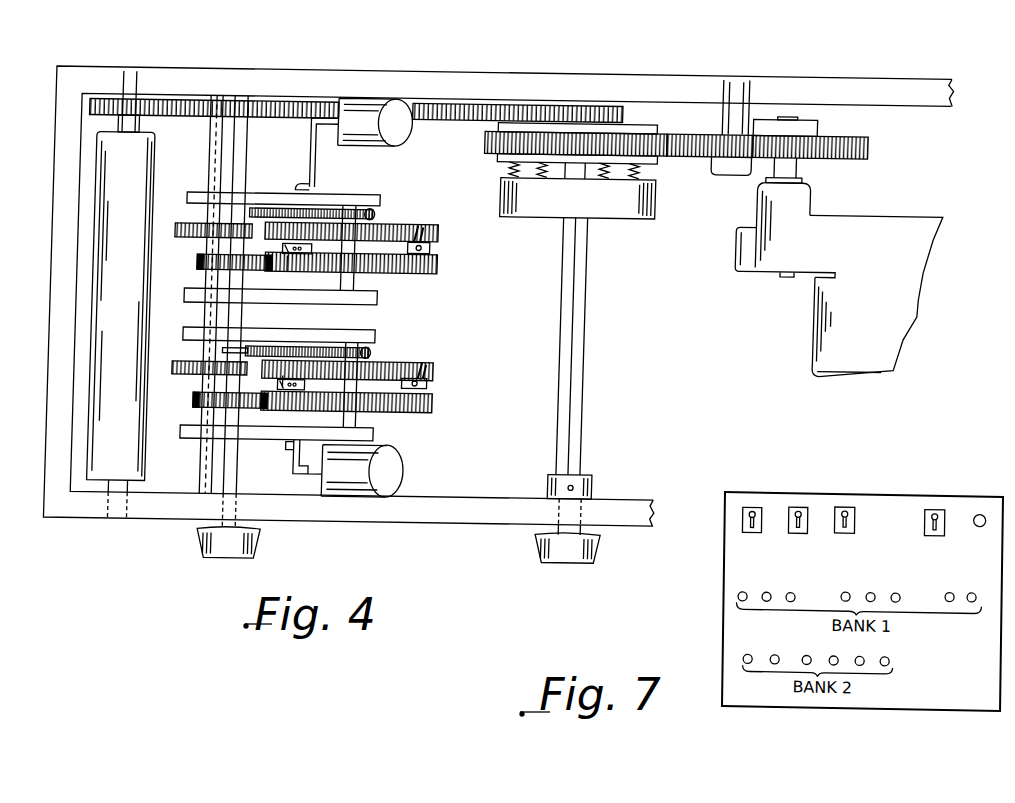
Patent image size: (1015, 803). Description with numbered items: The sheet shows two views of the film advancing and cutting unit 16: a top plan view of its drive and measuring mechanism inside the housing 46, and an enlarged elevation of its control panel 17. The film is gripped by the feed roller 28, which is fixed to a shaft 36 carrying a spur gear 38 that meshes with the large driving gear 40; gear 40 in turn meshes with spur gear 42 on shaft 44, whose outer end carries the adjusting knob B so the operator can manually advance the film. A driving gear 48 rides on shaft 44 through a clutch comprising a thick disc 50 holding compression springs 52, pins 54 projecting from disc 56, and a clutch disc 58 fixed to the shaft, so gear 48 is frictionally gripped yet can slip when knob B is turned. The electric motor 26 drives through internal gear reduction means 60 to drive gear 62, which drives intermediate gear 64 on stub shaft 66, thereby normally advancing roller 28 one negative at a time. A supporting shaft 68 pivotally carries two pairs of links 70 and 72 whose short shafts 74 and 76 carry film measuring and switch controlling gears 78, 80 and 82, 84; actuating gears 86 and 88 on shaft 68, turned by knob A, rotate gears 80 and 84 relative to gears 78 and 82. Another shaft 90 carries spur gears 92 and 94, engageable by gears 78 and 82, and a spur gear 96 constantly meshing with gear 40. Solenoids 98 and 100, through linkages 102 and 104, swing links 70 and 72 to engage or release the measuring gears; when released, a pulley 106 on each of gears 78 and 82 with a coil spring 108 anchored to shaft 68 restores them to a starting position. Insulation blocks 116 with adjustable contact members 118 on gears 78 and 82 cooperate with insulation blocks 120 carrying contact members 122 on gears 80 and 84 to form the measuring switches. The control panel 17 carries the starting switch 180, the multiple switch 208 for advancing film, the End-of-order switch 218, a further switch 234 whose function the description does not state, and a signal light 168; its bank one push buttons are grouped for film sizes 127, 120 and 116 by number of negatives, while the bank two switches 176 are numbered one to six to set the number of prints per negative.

In FIG. 4, the film advancing and cutting unit 16 is at (50, 457).
In FIG. 7, the control panel 17 is at (732, 547).
In FIG. 4, the electric motor 26 is at (903, 217).
In FIG. 4, the feed roller 28 is at (107, 171).
In FIG. 4, the shaft 36 is at (124, 119).
In FIG. 4, the spur gear 38 is at (118, 100).
In FIG. 4, the large driving gear 40 is at (268, 99).
In FIG. 4, the spur gear 42 is at (558, 97).
In FIG. 4, the shaft 44 is at (599, 282).
In FIG. 4, the housing 46 is at (416, 75).
In FIG. 4, the driving gear 48 is at (487, 131).
In FIG. 4, the thick disc 50 is at (553, 201).
In FIG. 4, the compression springs 52 is at (513, 161).
In FIG. 4, the pins 54 is at (584, 163).
In FIG. 4, the clutch disc 56 is at (502, 151).
In FIG. 4, the clutch disc 58 is at (656, 120).
In FIG. 4, the internal gear reduction means 60 is at (773, 232).
In FIG. 4, the drive gear 62 is at (859, 125).
In FIG. 4, the intermediate gear 64 is at (701, 126).
In FIG. 4, the stub shaft 66 is at (745, 108).
In FIG. 4, the supporting shaft 68 is at (243, 148).
In FIG. 4, the links 70 is at (264, 192).
In FIG. 7, the links 70 is at (739, 597).
In FIG. 4, the links 72 is at (383, 331).
In FIG. 4, the short shaft 74 is at (364, 280).
In FIG. 4, the short shaft 76 is at (370, 411).
In FIG. 4, the film measuring and switch controlling gear 78 is at (443, 228).
In FIG. 4, the film measuring and switch controlling gear 80 is at (443, 263).
In FIG. 4, the film measuring and switch controlling gear 82 is at (445, 362).
In FIG. 4, the film measuring and switch controlling gear 84 is at (446, 397).
In FIG. 4, the actuating gear 86 is at (200, 258).
In FIG. 4, the actuating gear 88 is at (204, 393).
In FIG. 4, the shaft 90 is at (232, 347).
In FIG. 4, the spur gear 92 is at (180, 227).
In FIG. 4, the spur gear 94 is at (179, 364).
In FIG. 4, the spur gear 96 is at (199, 93).
In FIG. 4, the solenoid 98 is at (358, 118).
In FIG. 4, the solenoid 100 is at (369, 472).
In FIG. 4, the linkage 102 is at (313, 138).
In FIG. 4, the linkage 104 is at (307, 459).
In FIG. 4, the pulley 106 is at (378, 205).
In FIG. 4, the coil spring 108 is at (331, 207).
In FIG. 4, the insulation block 116 is at (436, 243).
In FIG. 7, the insulation block 116 is at (963, 579).
In FIG. 4, the metallic contact member 118 is at (424, 223).
In FIG. 4, the insulation block 120 is at (293, 268).
In FIG. 7, the insulation block 120 is at (873, 578).
In FIG. 4, the metallic contact member 122 is at (318, 245).
In FIG. 7, the film size No. 127 switch group 127 is at (769, 571).
In FIG. 7, the signal light 168 is at (983, 511).
In FIG. 7, the switches of bank 2 176 is at (746, 660).
In FIG. 7, the starting switch 180 is at (757, 507).
In FIG. 7, the multiple switch 208 is at (935, 506).
In FIG. 7, the End-of-order switch 218 is at (845, 505).
In FIG. 7, the key switch 234 is at (800, 506).
In FIG. 4, the knob A is at (272, 542).
In FIG. 4, the adjusting knob B is at (552, 541).